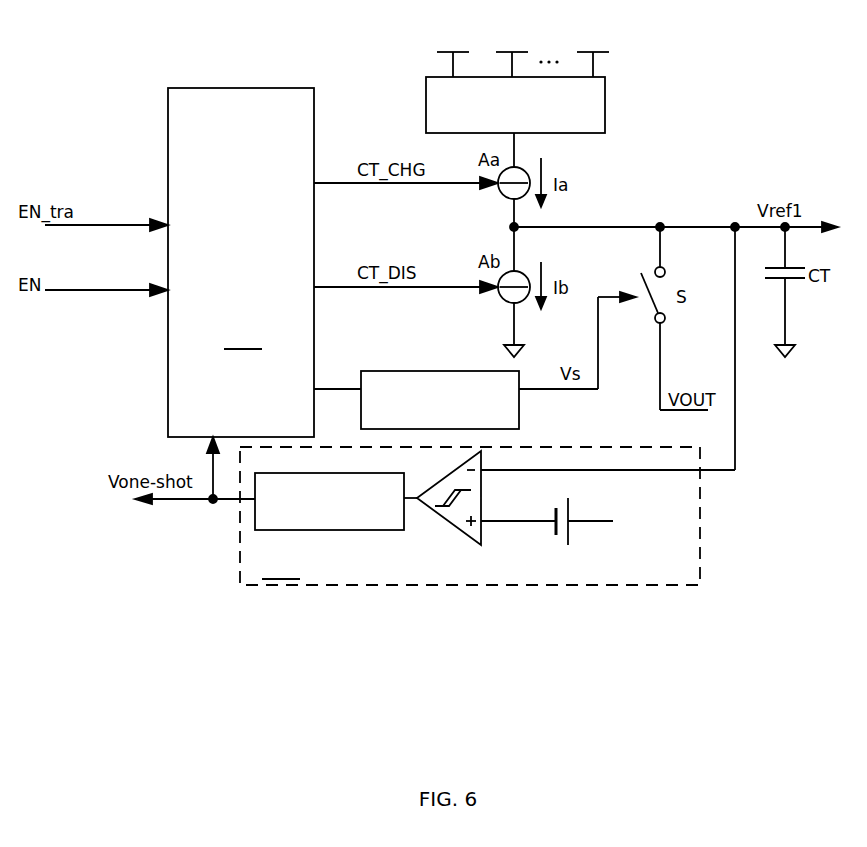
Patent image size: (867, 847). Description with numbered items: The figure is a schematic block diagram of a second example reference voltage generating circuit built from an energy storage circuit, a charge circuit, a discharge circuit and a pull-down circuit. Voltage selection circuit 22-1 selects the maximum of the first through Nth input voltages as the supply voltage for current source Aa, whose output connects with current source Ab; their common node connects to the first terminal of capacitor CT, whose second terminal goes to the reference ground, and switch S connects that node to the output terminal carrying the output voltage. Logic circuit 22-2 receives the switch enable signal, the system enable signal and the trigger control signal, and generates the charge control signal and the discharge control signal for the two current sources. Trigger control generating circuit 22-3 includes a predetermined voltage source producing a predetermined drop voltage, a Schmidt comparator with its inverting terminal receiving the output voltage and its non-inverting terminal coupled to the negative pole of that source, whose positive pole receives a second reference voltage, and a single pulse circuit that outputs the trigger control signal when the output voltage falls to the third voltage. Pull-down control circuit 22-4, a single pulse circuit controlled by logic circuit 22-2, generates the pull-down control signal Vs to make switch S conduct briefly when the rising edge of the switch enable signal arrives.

The voltage selection circuit 22-1 is at (606, 100).
The logic circuit 22-2 is at (241, 262).
The trigger control generating circuit 22-3 is at (487, 406).
The pull-down control circuit 22-4 is at (467, 371).